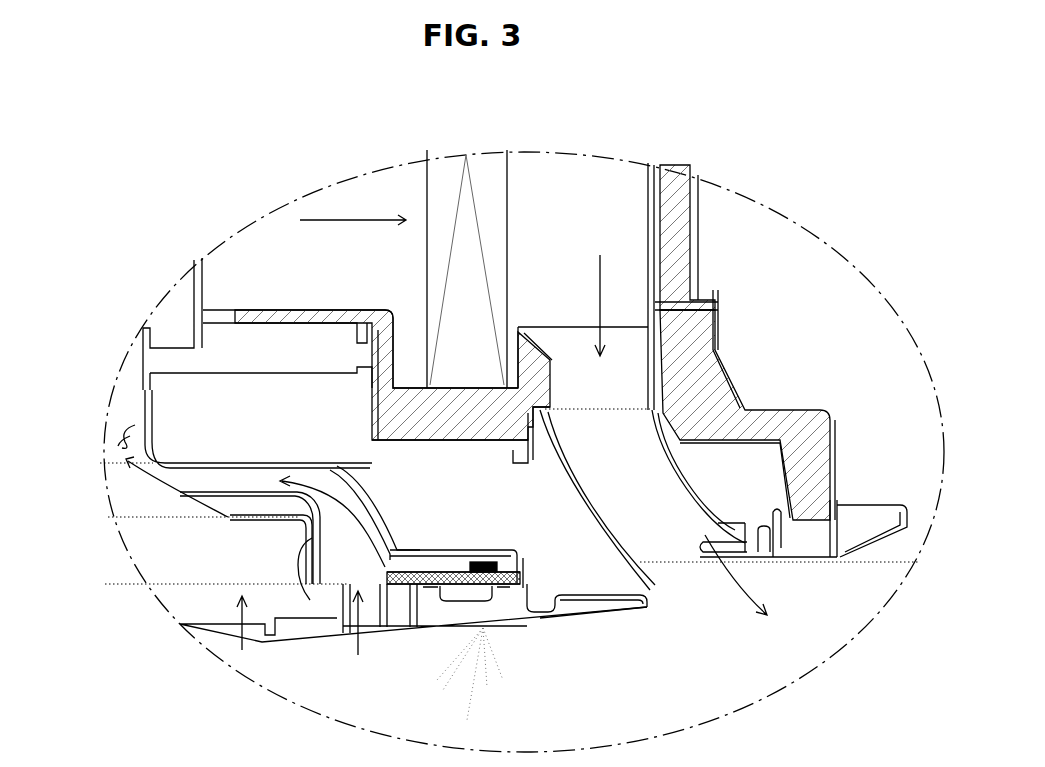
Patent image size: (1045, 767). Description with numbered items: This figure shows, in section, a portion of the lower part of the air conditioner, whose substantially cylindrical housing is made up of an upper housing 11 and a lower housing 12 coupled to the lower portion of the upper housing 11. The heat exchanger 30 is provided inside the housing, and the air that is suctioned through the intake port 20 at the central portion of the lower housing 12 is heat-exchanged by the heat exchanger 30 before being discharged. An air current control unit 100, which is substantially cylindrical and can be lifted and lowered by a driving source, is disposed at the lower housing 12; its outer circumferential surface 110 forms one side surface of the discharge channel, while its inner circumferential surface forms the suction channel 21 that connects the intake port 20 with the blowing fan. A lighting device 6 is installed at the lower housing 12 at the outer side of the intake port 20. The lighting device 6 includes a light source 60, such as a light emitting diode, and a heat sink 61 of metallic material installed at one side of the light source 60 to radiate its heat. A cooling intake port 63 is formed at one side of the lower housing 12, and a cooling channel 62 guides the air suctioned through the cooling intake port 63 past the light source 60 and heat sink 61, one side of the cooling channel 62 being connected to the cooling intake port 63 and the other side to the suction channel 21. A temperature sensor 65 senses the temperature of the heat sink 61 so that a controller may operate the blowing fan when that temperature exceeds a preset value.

The lighting device 6 is at (479, 626).
The upper housing 11 is at (700, 246).
The lower housing 12 is at (830, 445).
The intake port 20 is at (200, 641).
The suction channel 21 is at (122, 436).
The heat exchanger 30 is at (466, 155).
The light source 60 is at (470, 601).
The heat sink 61 is at (423, 550).
The cooling channel 62 is at (300, 543).
The cooling intake port 63 is at (368, 620).
The temperature sensor 65 is at (482, 561).
The air current control unit 100 is at (584, 616).
The outer circumferential surface 110 is at (640, 545).